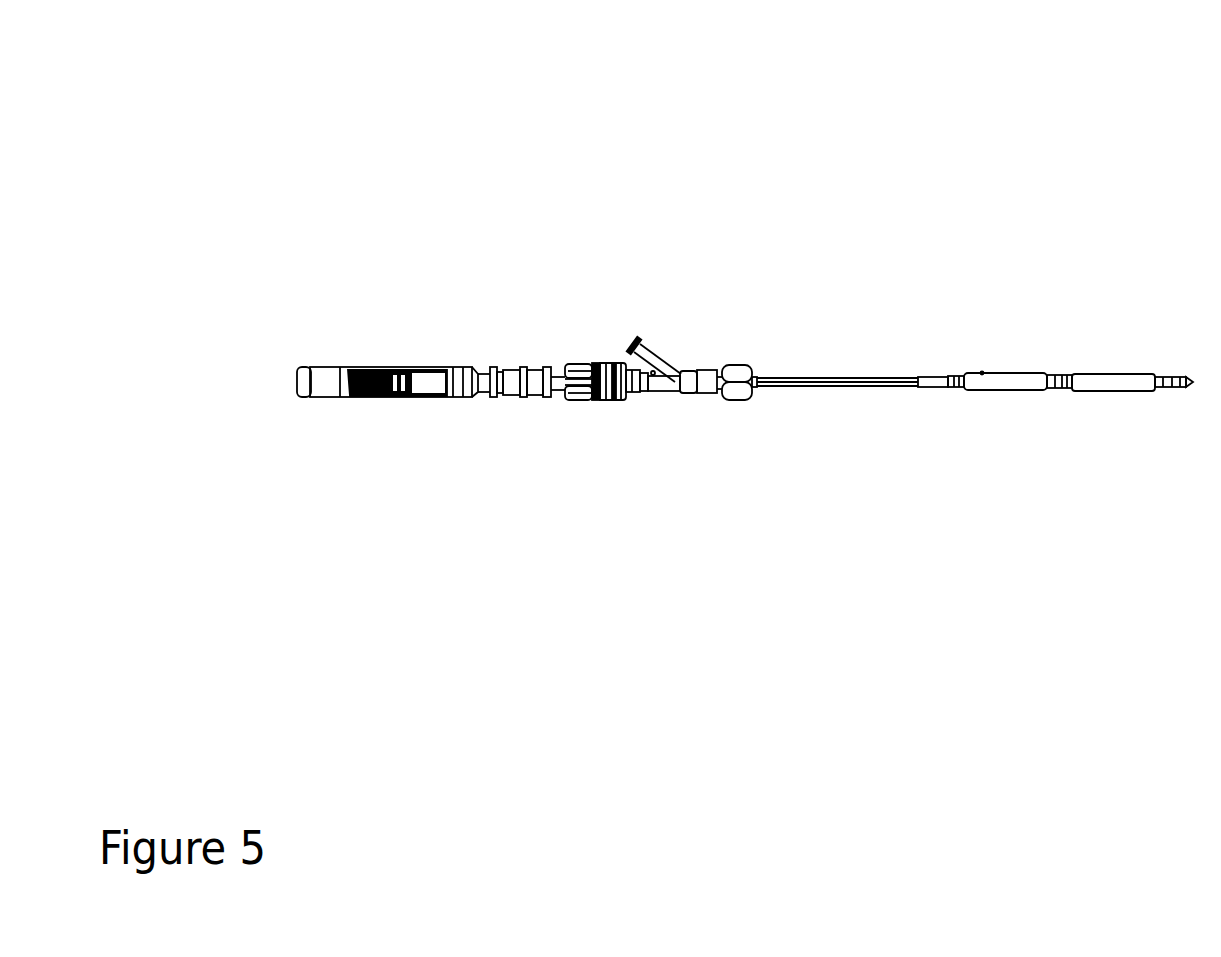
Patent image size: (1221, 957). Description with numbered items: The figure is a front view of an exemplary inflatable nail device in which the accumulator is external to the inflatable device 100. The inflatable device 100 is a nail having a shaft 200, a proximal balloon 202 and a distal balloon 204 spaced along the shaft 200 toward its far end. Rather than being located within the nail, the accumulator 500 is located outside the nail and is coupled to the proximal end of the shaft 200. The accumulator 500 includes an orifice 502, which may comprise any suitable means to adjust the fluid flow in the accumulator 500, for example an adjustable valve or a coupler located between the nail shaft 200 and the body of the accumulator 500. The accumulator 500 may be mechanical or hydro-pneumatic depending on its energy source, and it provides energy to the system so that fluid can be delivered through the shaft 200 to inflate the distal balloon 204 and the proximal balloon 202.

The inflatable device 100 is at (858, 152).
The external accumulator 500 is at (560, 348).
The orifice 502 is at (530, 397).
The shaft 200 is at (933, 391).
The proximal balloon 202 is at (1007, 374).
The distal balloon 204 is at (1128, 374).